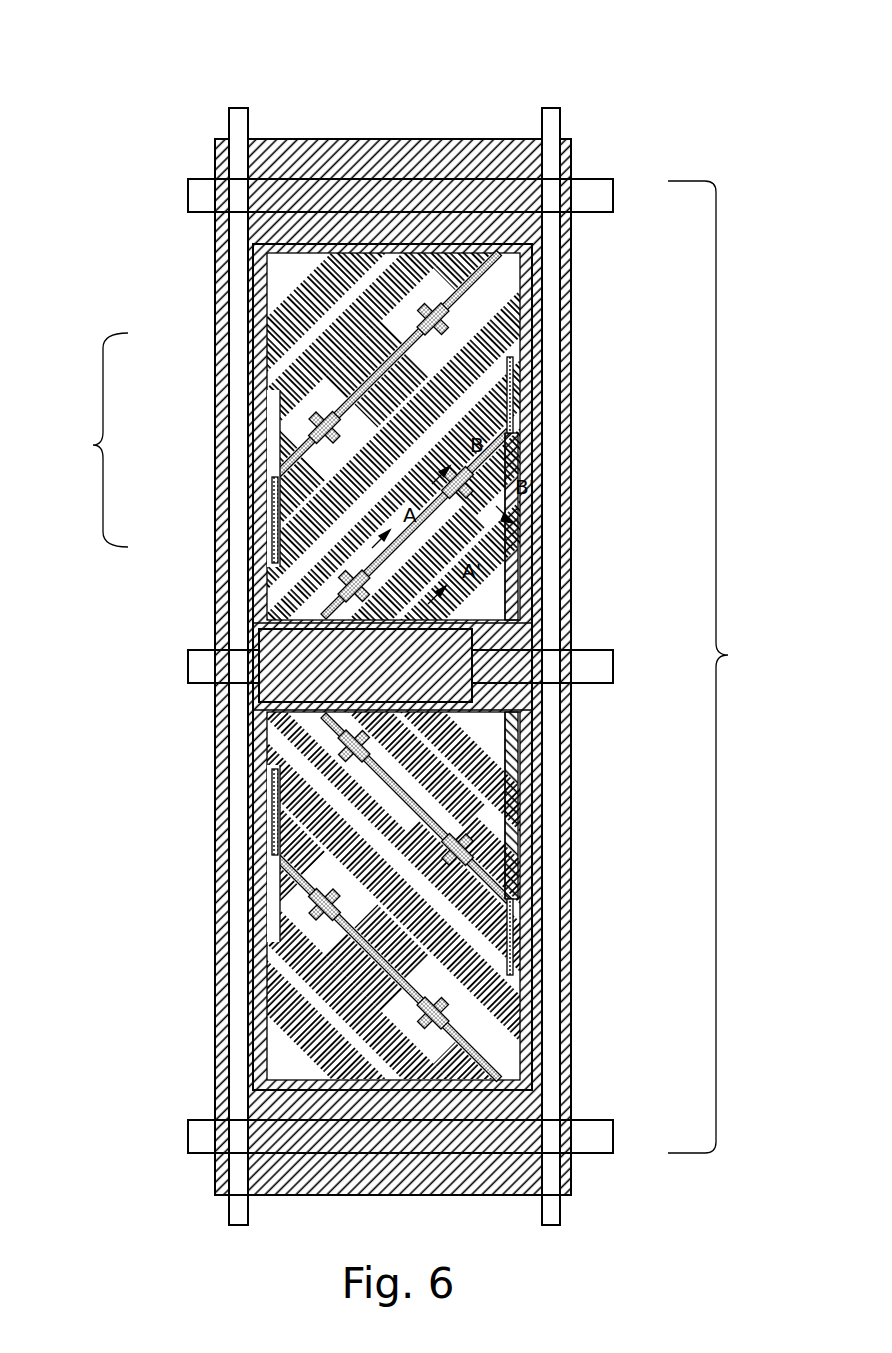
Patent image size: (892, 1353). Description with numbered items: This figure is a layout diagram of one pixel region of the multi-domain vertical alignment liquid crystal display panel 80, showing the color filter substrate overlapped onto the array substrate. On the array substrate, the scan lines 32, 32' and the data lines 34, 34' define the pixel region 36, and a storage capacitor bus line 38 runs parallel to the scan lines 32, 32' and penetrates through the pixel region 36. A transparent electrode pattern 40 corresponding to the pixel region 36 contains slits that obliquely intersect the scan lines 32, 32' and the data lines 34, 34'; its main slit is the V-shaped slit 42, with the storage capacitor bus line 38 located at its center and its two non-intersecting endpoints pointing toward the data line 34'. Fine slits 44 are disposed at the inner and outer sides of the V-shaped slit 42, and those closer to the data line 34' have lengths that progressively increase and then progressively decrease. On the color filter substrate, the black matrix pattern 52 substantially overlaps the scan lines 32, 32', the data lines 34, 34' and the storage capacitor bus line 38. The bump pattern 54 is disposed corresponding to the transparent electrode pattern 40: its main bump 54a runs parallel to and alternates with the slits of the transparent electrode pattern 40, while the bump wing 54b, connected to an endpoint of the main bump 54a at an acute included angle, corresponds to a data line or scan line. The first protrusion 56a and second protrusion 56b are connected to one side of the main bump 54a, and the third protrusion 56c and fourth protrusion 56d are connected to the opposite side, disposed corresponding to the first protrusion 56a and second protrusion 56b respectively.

The multi-domain vertical alignment liquid crystal display panel 80 is at (668, 37).
The data line 34 is at (237, 628).
The data line 34' is at (550, 628).
The scan line 32 is at (393, 638).
The scan line 32' is at (415, 1184).
The transparent electrode pattern 40 is at (382, 337).
The black matrix pattern 52 is at (572, 290).
The bump pattern 54 is at (92, 445).
The main bump 54a is at (365, 388).
The bump wing 54b is at (276, 520).
The V-shaped slit 42 is at (530, 523).
The storage capacitor bus line 38 is at (210, 668).
The pixel region 36 is at (728, 655).
The fine slits 44 is at (540, 856).
The first protrusion 56a is at (465, 836).
The second protrusion 56b is at (365, 738).
The third protrusion 56c is at (512, 880).
The fourth protrusion 56d is at (320, 748).